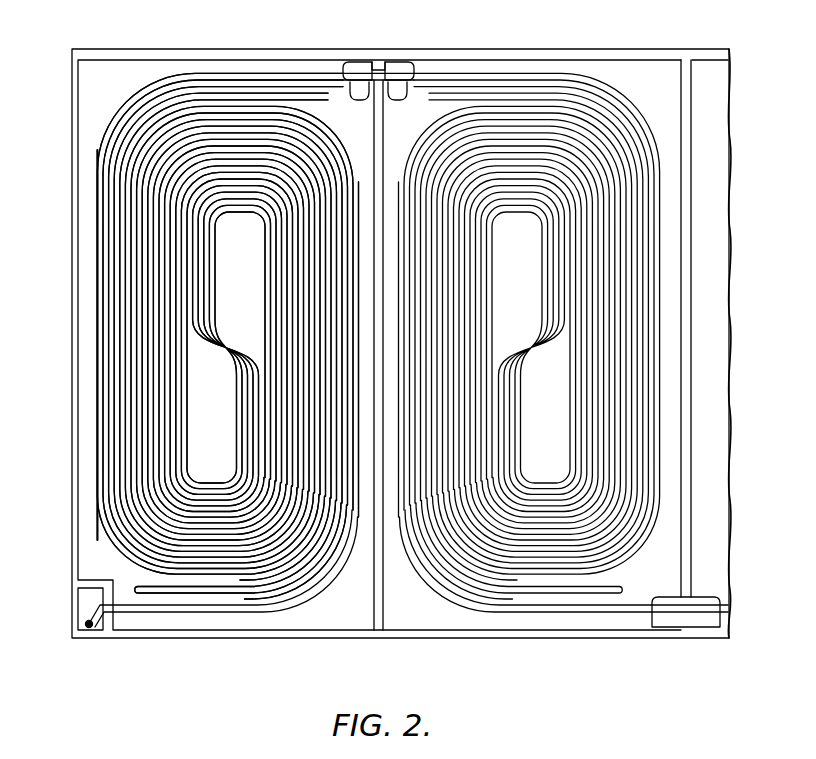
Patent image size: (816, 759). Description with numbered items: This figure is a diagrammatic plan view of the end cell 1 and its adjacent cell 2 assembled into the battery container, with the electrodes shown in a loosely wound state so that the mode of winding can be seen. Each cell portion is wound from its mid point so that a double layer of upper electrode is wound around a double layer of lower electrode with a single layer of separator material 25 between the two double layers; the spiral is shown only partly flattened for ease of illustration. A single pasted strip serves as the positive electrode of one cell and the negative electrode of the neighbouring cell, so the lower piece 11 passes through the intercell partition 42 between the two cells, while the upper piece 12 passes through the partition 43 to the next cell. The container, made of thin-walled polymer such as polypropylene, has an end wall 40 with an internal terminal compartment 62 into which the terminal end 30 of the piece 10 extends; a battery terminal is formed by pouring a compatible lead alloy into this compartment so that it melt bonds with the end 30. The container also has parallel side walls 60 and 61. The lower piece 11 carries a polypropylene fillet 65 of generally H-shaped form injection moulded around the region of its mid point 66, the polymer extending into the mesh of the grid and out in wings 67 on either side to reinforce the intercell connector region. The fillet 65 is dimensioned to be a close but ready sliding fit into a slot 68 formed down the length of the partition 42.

The cell 1 is at (145, 78).
The cell 2 is at (588, 80).
The pasted strip 10 is at (263, 251).
The lower piece 11 is at (200, 77).
The upper piece 12 is at (535, 251).
The separator material 25 is at (138, 432).
The terminal end 30 is at (89, 628).
The end wall 40 is at (70, 520).
The intercell partition 42 is at (386, 612).
The intercell partition 43 is at (695, 600).
The side wall 60 is at (163, 638).
The side wall 61 is at (250, 72).
The terminal compartment 62 is at (80, 604).
The fillet 65 is at (402, 68).
The mid point 66 is at (354, 68).
The wings 67 is at (399, 100).
The slot 68 is at (378, 66).